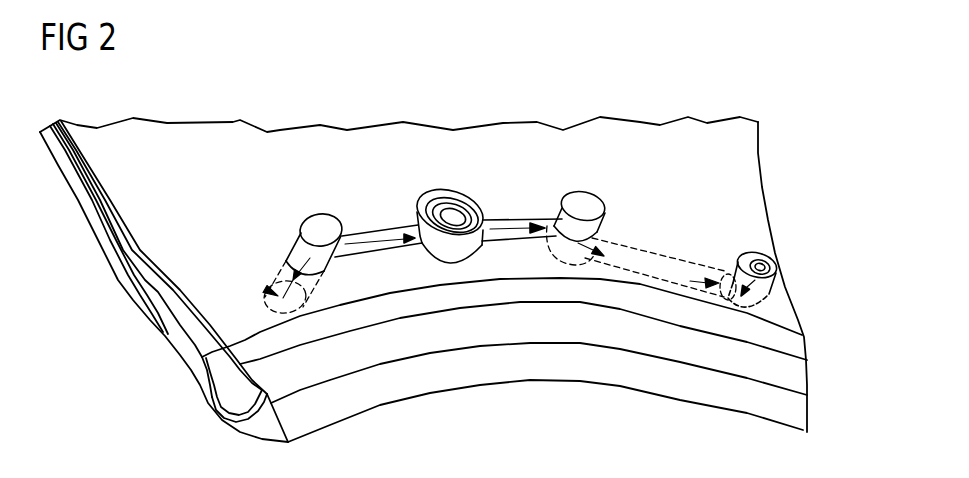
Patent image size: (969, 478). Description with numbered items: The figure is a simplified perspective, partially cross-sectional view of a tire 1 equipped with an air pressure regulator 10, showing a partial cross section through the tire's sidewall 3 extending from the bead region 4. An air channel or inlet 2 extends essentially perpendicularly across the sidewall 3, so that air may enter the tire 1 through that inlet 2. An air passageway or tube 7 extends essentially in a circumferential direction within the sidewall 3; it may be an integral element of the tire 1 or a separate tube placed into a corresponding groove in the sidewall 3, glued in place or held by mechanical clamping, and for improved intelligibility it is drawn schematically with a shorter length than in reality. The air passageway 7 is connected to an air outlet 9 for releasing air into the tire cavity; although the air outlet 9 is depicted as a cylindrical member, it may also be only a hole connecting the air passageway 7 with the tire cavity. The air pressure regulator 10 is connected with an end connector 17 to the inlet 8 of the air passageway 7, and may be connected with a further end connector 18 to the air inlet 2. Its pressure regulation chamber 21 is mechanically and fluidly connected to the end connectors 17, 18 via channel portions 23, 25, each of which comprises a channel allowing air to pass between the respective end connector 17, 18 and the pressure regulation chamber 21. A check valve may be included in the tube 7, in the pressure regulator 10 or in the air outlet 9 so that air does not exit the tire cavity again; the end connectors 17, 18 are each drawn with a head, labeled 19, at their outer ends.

The tire 1 is at (158, 357).
The air channel or inlet 2 is at (237, 278).
The sidewall 3 is at (117, 202).
The bead region 4 is at (222, 405).
The air passageway or tube 7 is at (683, 264).
The inlet of the air passageway 8 is at (560, 267).
The air outlet 9 is at (765, 264).
The air pressure regulator 10 is at (437, 197).
The end connector 17 is at (595, 236).
The further end connector 18 is at (294, 254).
The head 19 is at (316, 221).
The pressure regulation chamber 21 is at (447, 219).
The channel portion 23 is at (507, 218).
The channel portion 25 is at (373, 233).